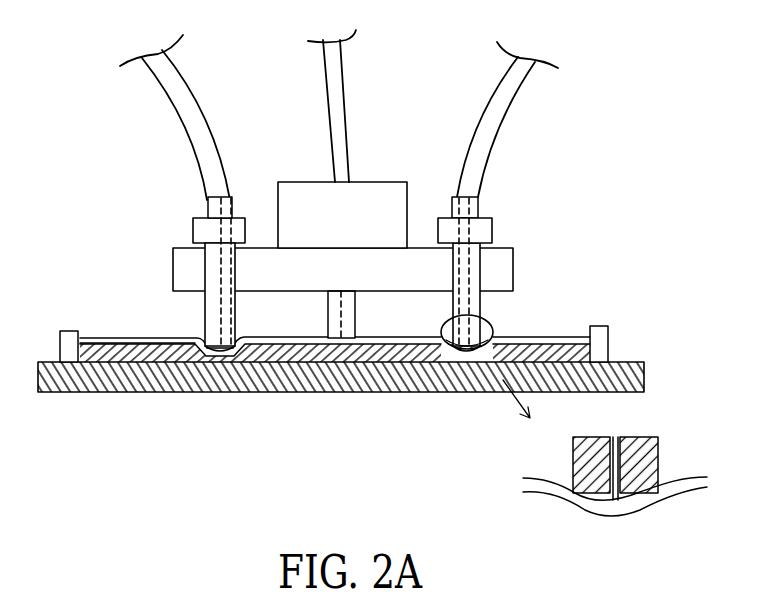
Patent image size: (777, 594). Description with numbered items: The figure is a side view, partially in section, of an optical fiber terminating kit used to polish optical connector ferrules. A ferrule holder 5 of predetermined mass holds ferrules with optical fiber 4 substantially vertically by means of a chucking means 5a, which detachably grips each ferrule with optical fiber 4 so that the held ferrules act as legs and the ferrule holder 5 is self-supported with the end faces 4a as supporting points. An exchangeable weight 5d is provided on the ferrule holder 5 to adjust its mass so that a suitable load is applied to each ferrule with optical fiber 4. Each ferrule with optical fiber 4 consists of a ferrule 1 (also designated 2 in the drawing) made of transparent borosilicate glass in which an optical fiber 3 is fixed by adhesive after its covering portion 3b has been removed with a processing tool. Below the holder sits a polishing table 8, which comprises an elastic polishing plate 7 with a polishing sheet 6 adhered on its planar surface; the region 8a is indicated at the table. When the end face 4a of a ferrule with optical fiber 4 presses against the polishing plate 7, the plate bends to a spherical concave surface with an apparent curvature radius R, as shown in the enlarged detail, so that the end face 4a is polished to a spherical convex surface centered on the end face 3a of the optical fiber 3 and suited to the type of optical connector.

The ferrule 1 is at (141, 216).
The fastening unit connector 2 is at (203, 233).
The optical fiber 3 is at (220, 278).
The end face of optical fiber 3a is at (212, 336).
The covering portion 3b is at (200, 146).
The ferrule with optical fiber 4 is at (222, 308).
The end face of ferrule with optical fiber 4a is at (207, 341).
The ferrule holder 5 is at (307, 173).
The chucking means 5a is at (503, 252).
The exchangeable weight 5d is at (385, 192).
The polishing sheet 6 is at (531, 338).
The polishing plate 7 is at (566, 346).
The polishing table 8 is at (624, 362).
The base hole 8a is at (348, 363).
The apparent curvature radius R is at (628, 492).